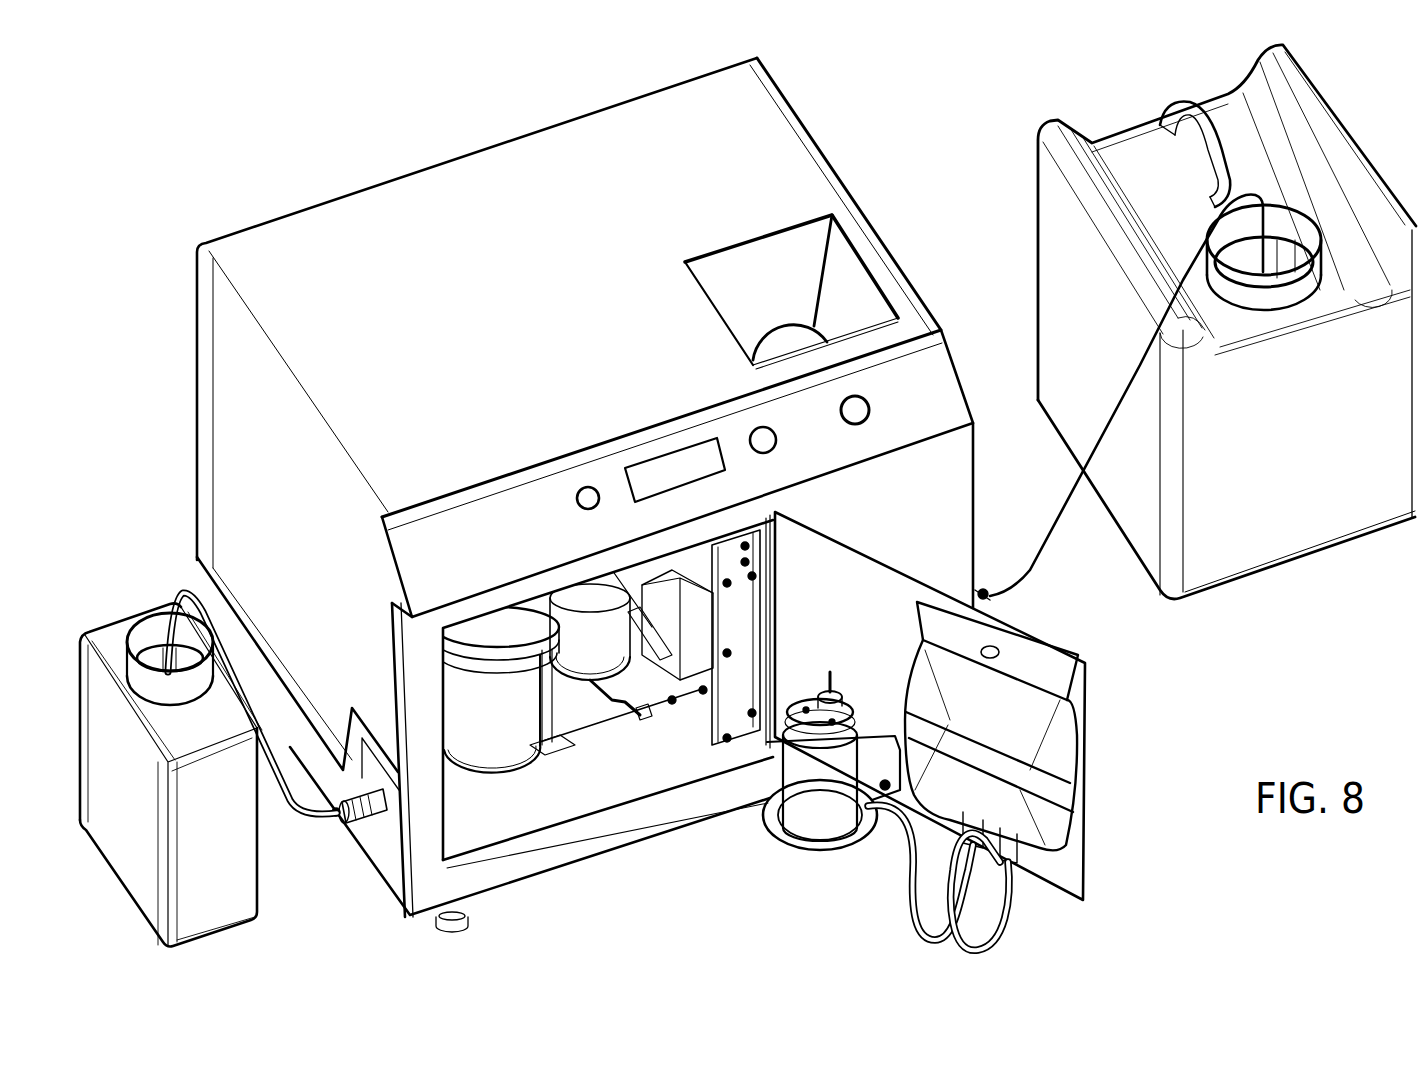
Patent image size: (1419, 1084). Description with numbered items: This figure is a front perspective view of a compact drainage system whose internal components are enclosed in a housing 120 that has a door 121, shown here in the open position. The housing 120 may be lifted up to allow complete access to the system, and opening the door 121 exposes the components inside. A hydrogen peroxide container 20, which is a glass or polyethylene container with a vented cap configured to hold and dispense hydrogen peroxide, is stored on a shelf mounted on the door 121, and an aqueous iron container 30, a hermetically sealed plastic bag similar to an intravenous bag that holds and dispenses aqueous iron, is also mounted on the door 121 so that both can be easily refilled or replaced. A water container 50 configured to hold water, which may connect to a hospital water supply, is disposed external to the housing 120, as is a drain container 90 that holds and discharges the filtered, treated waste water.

The housing 120 is at (585, 487).
The door 121 is at (925, 706).
The hydrogen peroxide container 20 is at (807, 818).
The aqueous iron container 30 is at (1062, 807).
The water container 50 is at (1227, 322).
The drain container 90 is at (171, 774).